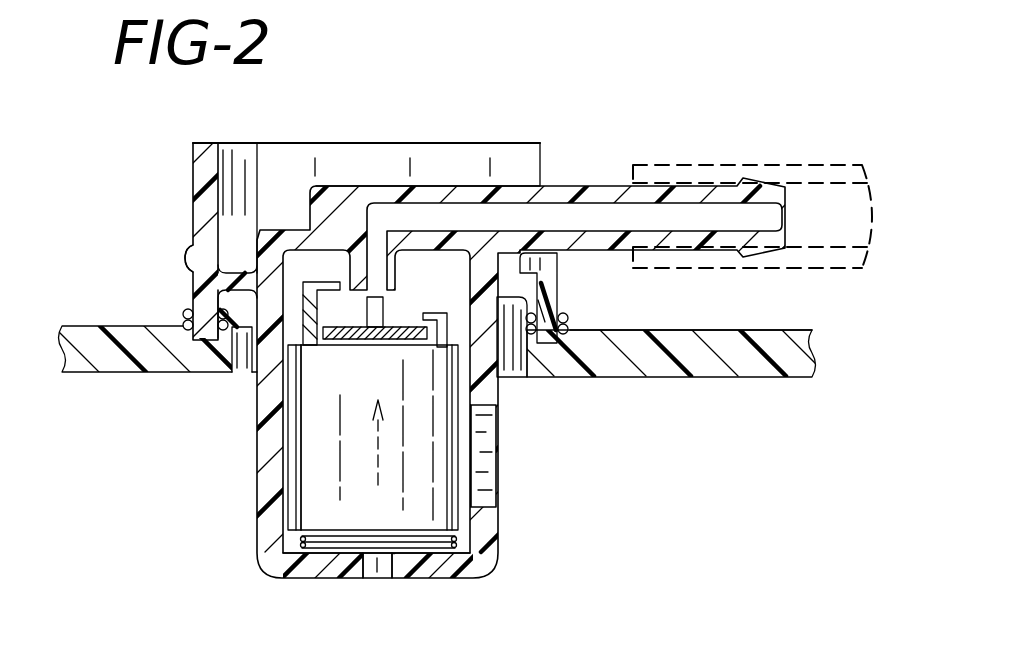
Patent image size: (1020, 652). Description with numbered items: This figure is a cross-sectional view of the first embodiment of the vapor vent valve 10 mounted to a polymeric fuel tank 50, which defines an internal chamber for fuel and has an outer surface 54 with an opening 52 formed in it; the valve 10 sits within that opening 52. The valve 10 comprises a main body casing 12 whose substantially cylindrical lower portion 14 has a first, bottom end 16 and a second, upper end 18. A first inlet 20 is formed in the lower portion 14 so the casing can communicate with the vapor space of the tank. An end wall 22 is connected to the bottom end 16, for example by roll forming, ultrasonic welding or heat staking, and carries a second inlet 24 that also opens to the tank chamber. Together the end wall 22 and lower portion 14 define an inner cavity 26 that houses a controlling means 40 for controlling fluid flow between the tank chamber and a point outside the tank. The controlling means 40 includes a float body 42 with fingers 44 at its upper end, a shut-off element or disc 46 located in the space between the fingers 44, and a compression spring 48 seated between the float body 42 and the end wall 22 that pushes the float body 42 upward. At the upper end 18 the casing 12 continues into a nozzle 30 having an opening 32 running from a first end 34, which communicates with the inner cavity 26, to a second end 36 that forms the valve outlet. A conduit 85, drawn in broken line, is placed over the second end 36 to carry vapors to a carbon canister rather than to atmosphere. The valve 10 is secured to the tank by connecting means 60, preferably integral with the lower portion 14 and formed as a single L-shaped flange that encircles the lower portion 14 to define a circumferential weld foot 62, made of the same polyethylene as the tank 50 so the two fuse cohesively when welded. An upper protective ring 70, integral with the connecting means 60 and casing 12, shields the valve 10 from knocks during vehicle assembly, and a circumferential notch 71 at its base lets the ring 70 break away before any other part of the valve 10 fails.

The vapor vent valve 10 is at (518, 132).
The main body casing 12 is at (258, 404).
The lower portion 14 is at (258, 483).
The first, bottom end 16 is at (497, 562).
The second, upper end 18 is at (268, 222).
The first inlet 20 is at (485, 483).
The end wall 22 is at (432, 578).
The second inlet 24 is at (370, 578).
The inner cavity 26 is at (485, 507).
The nozzle 30 is at (551, 190).
The opening 32 is at (598, 215).
The first end 34 is at (353, 232).
The second end 36 is at (770, 192).
The controlling means 40 is at (305, 427).
The float body 42 is at (315, 497).
The fingers 44 is at (320, 300).
The shut-off element or disc 46 is at (340, 352).
The compression spring 48 is at (290, 548).
The fuel tank 50 is at (620, 378).
The opening 52 is at (515, 372).
The outer surface 54 is at (682, 331).
The connecting means 60 is at (184, 308).
The weld foot 62 is at (553, 297).
The upper protective ring 70 is at (200, 168).
The circumferential notch 71 is at (188, 232).
The conduit 85 is at (826, 268).